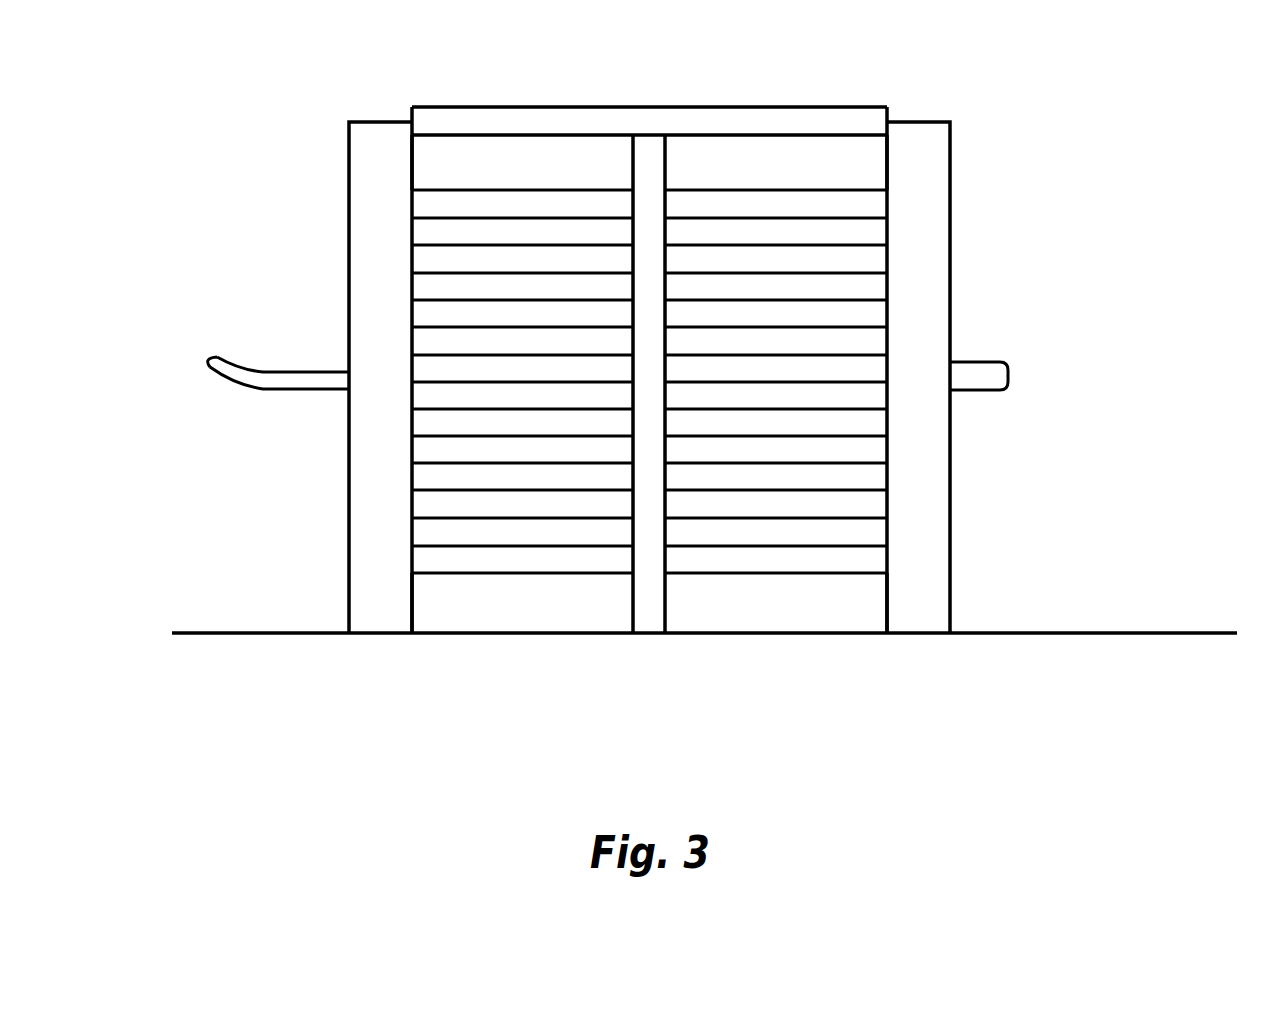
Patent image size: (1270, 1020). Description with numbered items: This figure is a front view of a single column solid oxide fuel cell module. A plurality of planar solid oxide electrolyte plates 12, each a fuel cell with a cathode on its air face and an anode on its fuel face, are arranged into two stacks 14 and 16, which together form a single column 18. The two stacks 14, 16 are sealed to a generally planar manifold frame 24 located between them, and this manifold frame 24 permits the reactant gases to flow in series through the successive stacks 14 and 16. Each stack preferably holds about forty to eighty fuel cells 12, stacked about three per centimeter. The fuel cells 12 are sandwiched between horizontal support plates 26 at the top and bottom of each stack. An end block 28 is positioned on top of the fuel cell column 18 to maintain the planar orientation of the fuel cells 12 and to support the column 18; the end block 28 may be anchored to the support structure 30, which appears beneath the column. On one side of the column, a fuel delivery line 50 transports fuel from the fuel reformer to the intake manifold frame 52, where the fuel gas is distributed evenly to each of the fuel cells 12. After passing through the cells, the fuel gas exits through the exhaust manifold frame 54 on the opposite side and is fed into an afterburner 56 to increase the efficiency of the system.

The planar solid oxide electrolyte plate 12 is at (425, 205).
The stack 14 is at (520, 645).
The stack 16 is at (813, 645).
The single column 18 is at (722, 77).
The manifold frame 24 is at (645, 617).
The horizontal support plate 26 is at (425, 157).
The end block 28 is at (532, 116).
The support structure 30 is at (1160, 633).
The fuel delivery line 50 is at (250, 390).
The intake manifold frame 52 is at (360, 265).
The exhaust manifold frame 54 is at (930, 302).
The afterburner 56 is at (1010, 375).